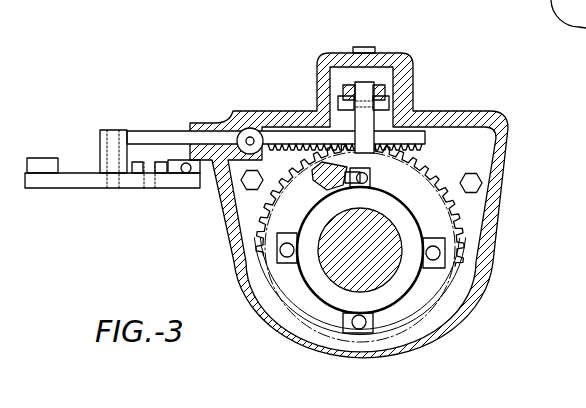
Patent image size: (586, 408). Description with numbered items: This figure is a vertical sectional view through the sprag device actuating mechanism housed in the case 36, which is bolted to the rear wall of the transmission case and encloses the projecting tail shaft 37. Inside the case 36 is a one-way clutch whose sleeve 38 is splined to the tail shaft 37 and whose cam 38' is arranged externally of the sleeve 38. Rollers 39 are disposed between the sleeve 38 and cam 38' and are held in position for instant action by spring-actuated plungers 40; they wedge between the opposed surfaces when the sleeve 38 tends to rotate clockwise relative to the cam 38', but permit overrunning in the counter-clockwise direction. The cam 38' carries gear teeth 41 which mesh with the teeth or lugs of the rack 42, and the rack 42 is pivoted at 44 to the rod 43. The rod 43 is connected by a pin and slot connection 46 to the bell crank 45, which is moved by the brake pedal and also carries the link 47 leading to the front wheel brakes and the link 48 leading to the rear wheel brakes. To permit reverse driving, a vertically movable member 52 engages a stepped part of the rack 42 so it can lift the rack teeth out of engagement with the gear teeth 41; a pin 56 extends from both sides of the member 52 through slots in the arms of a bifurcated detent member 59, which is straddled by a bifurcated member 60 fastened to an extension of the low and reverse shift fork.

The case 36 is at (493, 228).
The tail shaft 37 is at (360, 250).
The sleeve 38 is at (360, 253).
The cam 38' is at (358, 303).
The rollers 39 is at (287, 249).
The spring-actuated plungers 40 is at (344, 188).
The gear teeth 41 is at (425, 168).
The rack 42 is at (428, 137).
The rod 43 is at (153, 136).
The pivot 44 is at (250, 128).
The bell crank 45 is at (75, 178).
The pin and slot connection 46 is at (116, 132).
The link 47 is at (42, 162).
The link 48 is at (193, 177).
The member 52 is at (370, 83).
The pin 56 is at (380, 92).
The bifurcated detent member 59 is at (348, 88).
The bifurcated member 60 is at (389, 103).